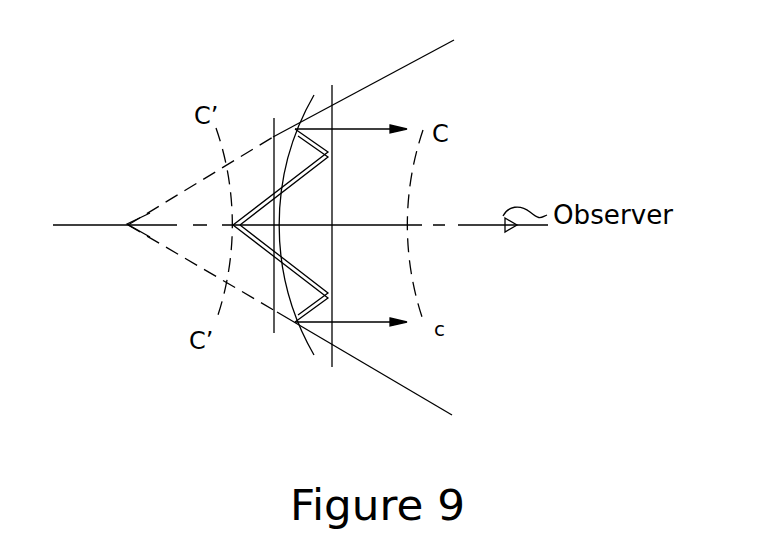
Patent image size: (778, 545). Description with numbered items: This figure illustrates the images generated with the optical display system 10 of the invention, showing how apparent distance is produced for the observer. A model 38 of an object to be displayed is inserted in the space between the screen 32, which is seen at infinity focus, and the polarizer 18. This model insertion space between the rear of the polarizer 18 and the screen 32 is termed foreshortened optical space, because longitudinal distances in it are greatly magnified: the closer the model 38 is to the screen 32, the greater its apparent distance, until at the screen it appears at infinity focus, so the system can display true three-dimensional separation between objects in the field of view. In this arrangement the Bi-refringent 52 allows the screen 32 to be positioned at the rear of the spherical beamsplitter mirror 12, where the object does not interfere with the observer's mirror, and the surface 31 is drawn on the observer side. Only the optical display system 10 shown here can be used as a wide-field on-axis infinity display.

The optical display system 10 is at (320, 76).
The spherical beamsplitter mirror 12 is at (300, 338).
The polarizer 18 is at (274, 333).
The observer-side focal surface 31 is at (415, 293).
The screen 32 is at (222, 302).
The model 38 is at (257, 207).
The Bi-refringent 52 is at (332, 367).